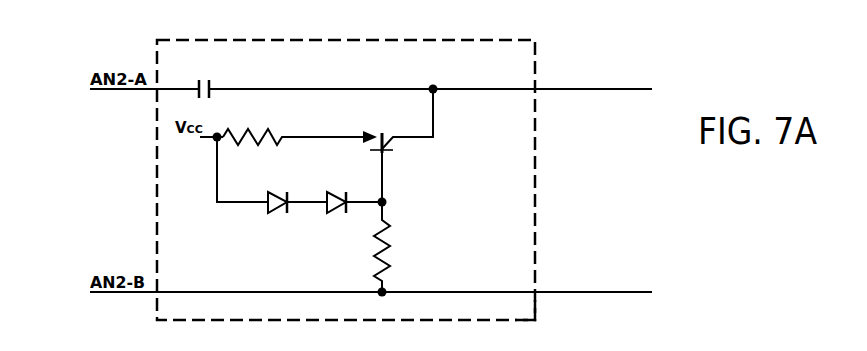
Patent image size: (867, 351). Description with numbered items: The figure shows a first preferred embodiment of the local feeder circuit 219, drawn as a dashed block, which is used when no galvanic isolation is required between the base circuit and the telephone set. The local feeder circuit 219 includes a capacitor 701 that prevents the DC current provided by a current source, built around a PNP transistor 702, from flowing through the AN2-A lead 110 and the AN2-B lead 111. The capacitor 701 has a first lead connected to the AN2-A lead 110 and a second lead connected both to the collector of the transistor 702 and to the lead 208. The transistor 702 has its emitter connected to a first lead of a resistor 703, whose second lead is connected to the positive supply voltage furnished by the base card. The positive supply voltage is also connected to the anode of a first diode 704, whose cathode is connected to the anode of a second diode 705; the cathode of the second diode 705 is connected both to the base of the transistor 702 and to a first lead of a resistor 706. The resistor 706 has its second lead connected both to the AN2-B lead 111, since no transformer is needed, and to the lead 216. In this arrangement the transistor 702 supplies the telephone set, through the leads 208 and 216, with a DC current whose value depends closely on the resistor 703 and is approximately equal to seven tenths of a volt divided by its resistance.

The AN2-A lead 110 is at (135, 91).
The AN2-B lead 111 is at (137, 293).
The lead 208 is at (593, 89).
The lead 216 is at (593, 291).
The local feeder circuit 219 is at (535, 298).
The capacitor 701 is at (211, 91).
The PNP transistor 702 is at (384, 152).
The resistor 703 is at (275, 135).
The first diode 704 is at (288, 213).
The second diode 705 is at (338, 213).
The resistor 706 is at (385, 222).